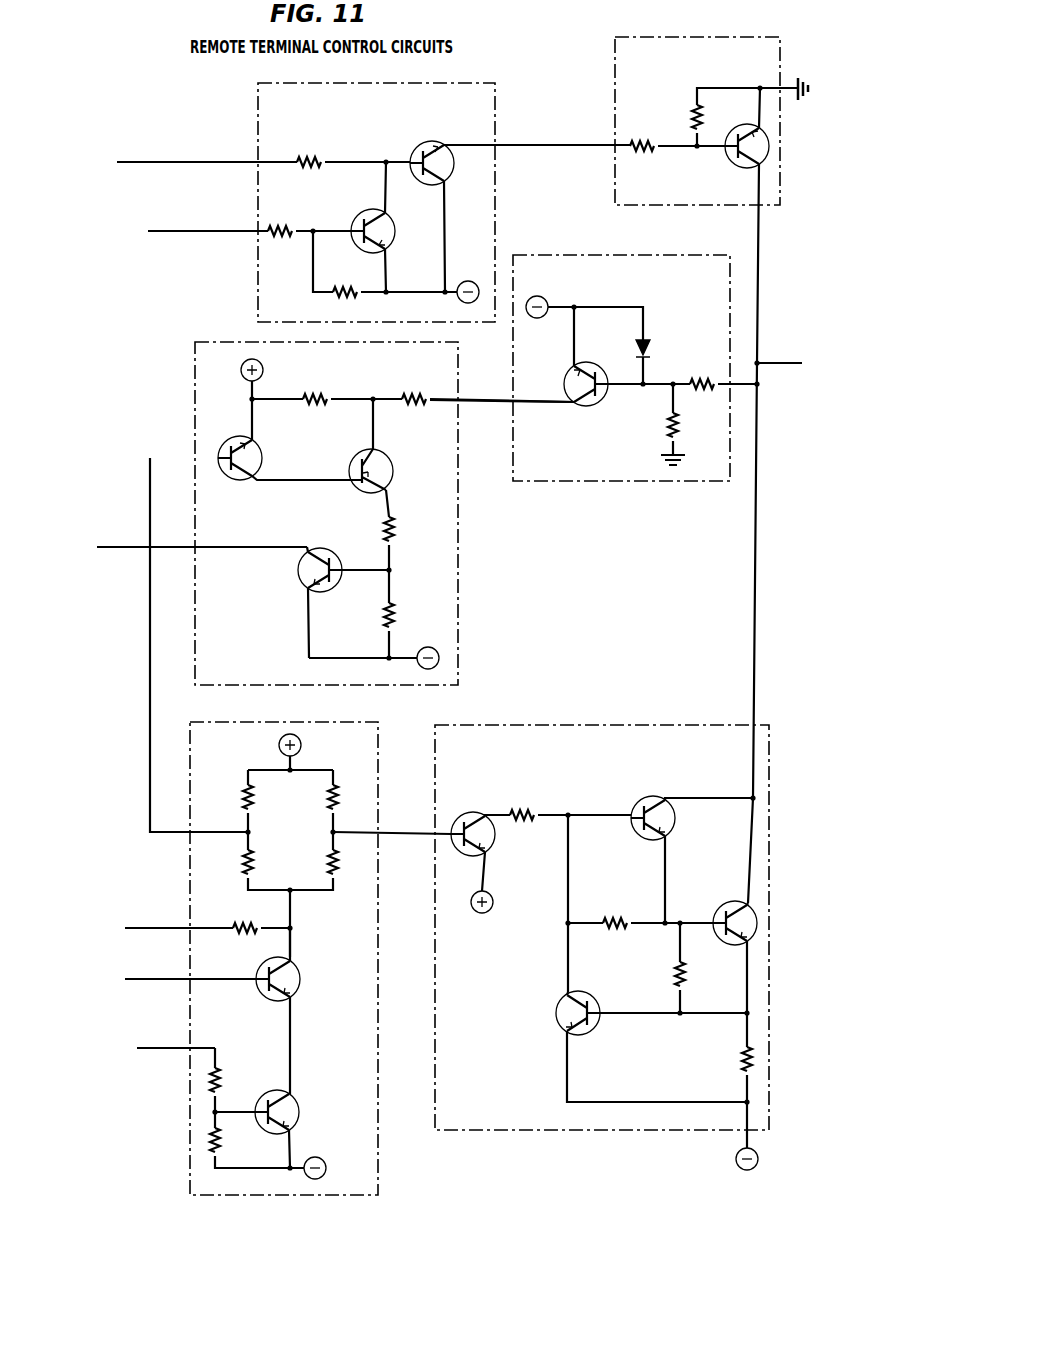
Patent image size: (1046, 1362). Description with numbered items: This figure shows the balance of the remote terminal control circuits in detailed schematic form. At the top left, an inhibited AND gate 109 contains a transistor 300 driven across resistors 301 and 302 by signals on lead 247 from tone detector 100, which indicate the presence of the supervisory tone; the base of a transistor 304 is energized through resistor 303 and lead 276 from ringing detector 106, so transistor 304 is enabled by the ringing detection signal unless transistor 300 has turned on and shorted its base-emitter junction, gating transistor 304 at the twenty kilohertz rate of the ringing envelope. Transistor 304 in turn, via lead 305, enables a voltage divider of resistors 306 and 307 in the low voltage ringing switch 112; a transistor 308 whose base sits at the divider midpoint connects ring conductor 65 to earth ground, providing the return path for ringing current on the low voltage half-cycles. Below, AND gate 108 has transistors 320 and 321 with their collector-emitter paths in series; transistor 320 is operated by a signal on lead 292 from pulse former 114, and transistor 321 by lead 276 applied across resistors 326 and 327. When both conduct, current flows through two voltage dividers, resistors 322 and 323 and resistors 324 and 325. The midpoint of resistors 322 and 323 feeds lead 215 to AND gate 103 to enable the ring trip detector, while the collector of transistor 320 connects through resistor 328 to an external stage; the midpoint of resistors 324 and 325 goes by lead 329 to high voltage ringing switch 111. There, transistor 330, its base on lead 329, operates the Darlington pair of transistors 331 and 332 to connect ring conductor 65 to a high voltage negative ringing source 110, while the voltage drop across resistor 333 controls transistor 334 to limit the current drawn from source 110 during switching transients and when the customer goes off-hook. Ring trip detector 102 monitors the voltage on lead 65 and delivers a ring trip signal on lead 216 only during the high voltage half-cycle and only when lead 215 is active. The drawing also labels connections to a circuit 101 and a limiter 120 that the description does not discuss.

The inhibited AND gate 109 is at (477, 83).
The lead 276 is at (197, 157).
The ringing detector 106 is at (86, 596).
The lead 247 is at (205, 234).
The tone detector 100 is at (100, 228).
The resistor 303 is at (309, 152).
The transistor 304 is at (444, 216).
The resistor 301 is at (280, 220).
The transistor 300 is at (386, 227).
The resistor 302 is at (345, 280).
The lead 305 is at (558, 139).
The low voltage ringing switch 112 is at (615, 58).
The resistor 306 is at (683, 116).
The resistor 307 is at (642, 159).
The transistor 308 is at (744, 140).
The ring trip detector circuit 102 is at (705, 255).
The ring conductor 65 is at (792, 366).
The AND gate 103 is at (195, 384).
The lead 216 is at (170, 549).
The interface circuit 101 is at (71, 545).
The AND gate 108 is at (363, 722).
The lead 215 is at (169, 828).
The resistor 322 is at (234, 797).
The resistor 324 is at (347, 797).
The resistor 323 is at (234, 862).
The resistor 325 is at (347, 862).
The lead 329 is at (407, 828).
The resistor 328 is at (245, 916).
The lead 292 is at (164, 976).
The limiter 120 is at (78, 927).
The pulse former 114 is at (148, 978).
The transistor 320 is at (290, 1011).
The transistor 321 is at (289, 1129).
The resistor 326 is at (228, 1080).
The resistor 327 is at (228, 1140).
The high voltage ringing switch 111 is at (698, 736).
The transistor 330 is at (484, 851).
The transistor 331 is at (692, 859).
The transistor 332 is at (731, 948).
The transistor 334 is at (638, 1046).
The resistor 333 is at (732, 1080).
The negative ringing source 110 is at (740, 1159).